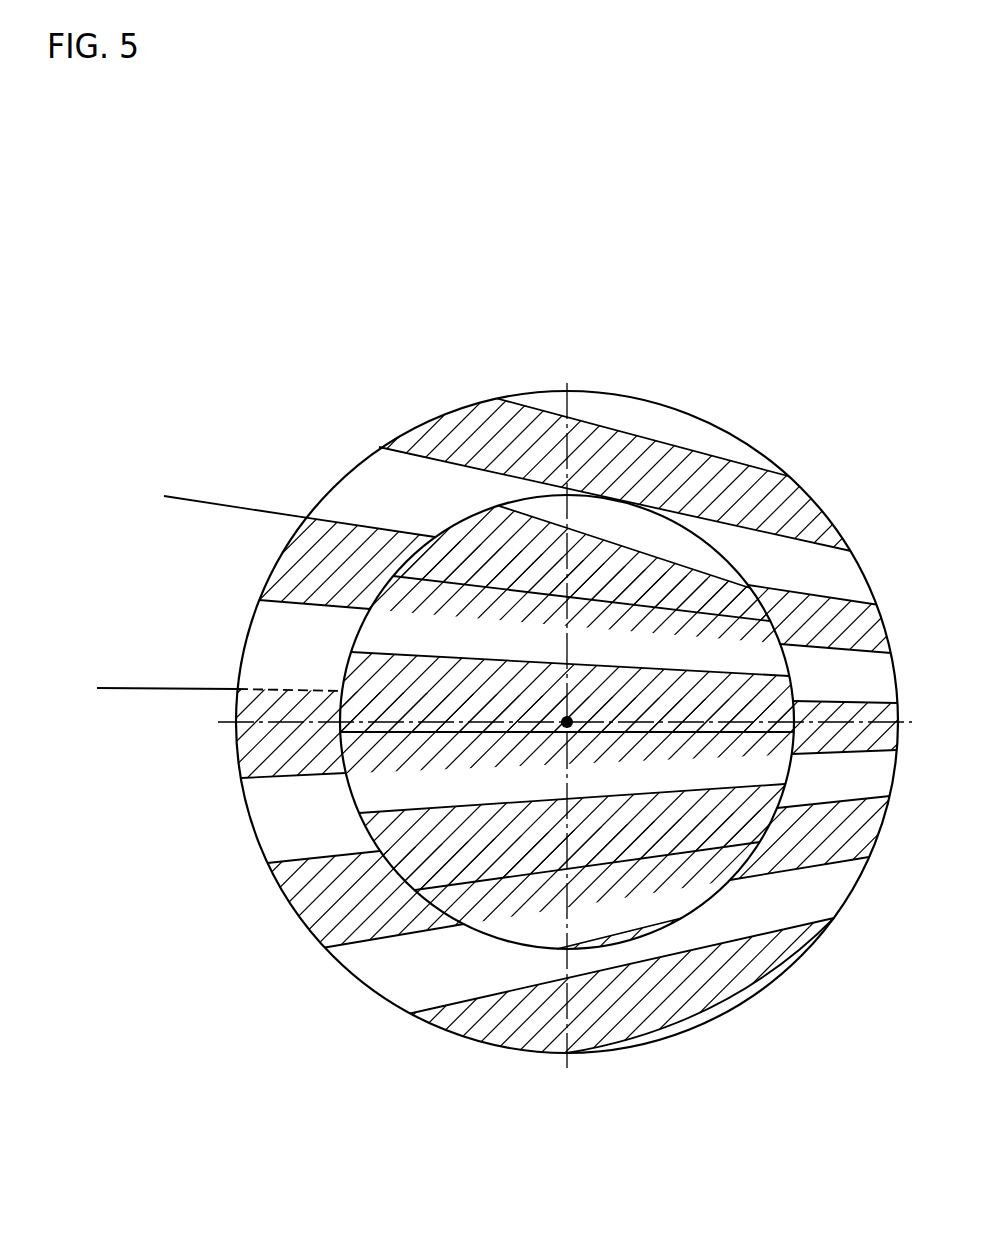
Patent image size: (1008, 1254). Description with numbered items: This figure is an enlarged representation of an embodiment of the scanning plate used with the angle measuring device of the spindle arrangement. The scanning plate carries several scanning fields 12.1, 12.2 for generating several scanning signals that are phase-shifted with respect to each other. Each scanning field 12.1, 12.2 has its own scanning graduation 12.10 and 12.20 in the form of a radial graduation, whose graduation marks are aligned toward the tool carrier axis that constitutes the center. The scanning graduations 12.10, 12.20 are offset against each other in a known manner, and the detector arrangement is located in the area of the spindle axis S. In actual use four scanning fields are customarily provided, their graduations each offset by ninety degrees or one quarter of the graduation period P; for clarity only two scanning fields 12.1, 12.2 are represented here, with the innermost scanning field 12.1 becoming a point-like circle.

The scanning field 12.1 is at (440, 537).
The scanning field 12.2 is at (538, 390).
The scanning graduation 12.10 is at (507, 913).
The scanning graduation 12.20 is at (292, 810).
The spindle axis S is at (568, 716).
The graduation period P is at (192, 502).